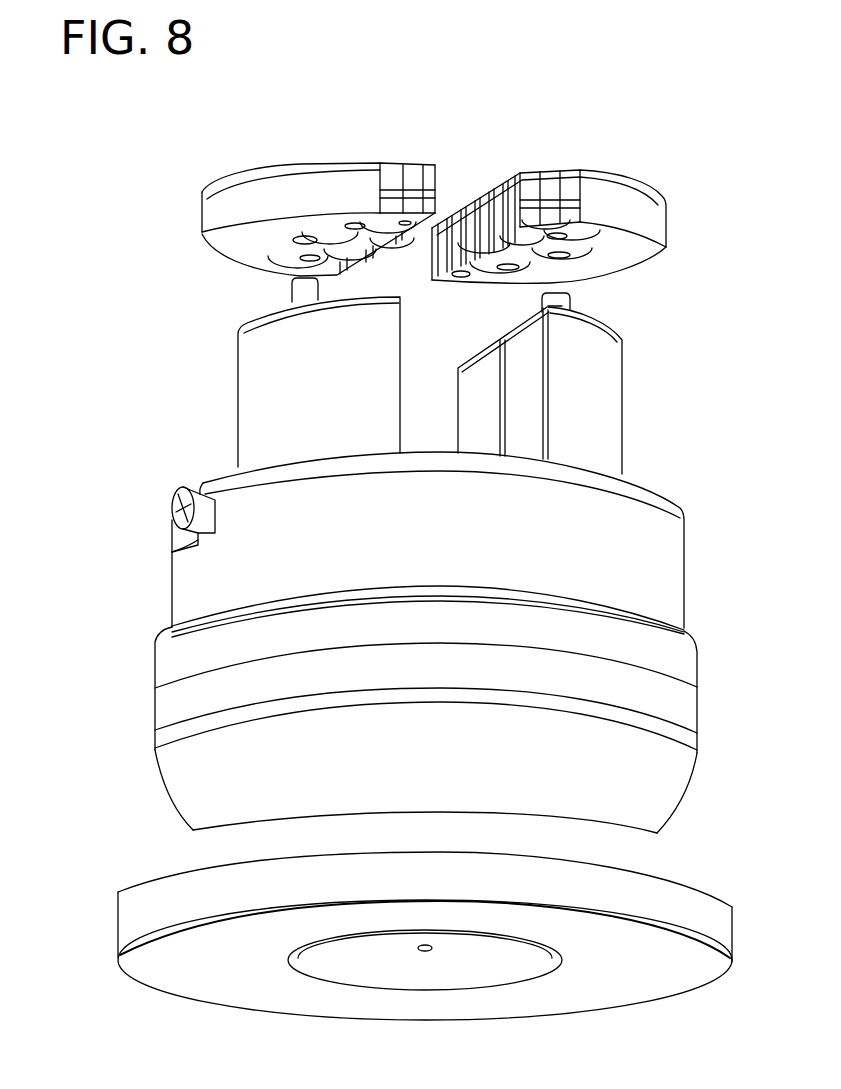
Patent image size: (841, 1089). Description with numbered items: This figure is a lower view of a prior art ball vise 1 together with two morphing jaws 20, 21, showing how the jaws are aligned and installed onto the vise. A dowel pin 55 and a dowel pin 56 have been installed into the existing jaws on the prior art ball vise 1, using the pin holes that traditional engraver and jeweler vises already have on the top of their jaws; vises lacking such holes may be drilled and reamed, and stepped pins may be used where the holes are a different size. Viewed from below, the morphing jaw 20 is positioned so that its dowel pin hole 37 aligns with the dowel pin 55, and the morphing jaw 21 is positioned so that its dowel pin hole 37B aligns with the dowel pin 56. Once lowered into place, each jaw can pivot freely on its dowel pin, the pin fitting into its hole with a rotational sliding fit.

The prior art ball vise 1 is at (70, 300).
The morphing jaw 20 is at (296, 117).
The morphing jaw 21 is at (524, 113).
The dowel pin hole 37 is at (262, 252).
The dowel pin hole 37B is at (566, 256).
The dowel pin 55 is at (298, 290).
The dowel pin 56 is at (550, 306).